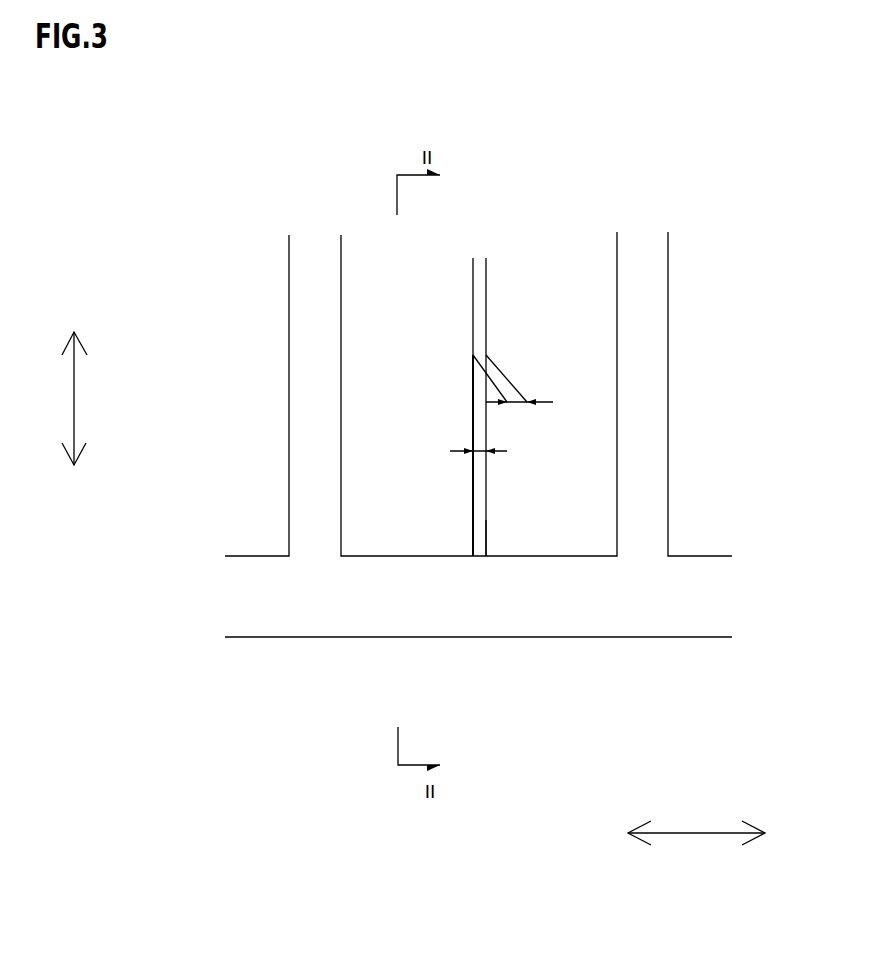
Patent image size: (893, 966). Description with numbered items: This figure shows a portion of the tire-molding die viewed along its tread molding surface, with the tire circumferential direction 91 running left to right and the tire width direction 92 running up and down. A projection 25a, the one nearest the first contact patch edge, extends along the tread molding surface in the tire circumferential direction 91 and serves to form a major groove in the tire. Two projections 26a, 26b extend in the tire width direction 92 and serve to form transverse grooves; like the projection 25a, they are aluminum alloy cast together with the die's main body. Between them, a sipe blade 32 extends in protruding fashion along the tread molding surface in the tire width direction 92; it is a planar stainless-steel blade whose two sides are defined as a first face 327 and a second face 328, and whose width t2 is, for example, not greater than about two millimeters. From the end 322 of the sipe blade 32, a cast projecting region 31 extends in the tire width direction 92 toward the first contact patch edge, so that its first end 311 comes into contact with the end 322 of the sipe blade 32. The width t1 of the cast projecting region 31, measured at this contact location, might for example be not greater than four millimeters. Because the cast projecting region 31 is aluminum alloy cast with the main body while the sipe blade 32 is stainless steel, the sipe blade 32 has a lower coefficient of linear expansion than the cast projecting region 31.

The projection 25a is at (464, 605).
The projection 26a is at (300, 382).
The projection 26b is at (655, 384).
The cast projecting region 31 is at (478, 273).
The first end of cast projecting region 311 is at (484, 356).
The sipe blade 32 is at (482, 486).
The end of sipe blade 322 is at (473, 354).
The first face 327 is at (473, 531).
The second face 328 is at (486, 528).
The width of cast projecting region t1 is at (519, 392).
The width of sipe blade t2 is at (482, 442).
The tire circumferential direction 91 is at (696, 824).
The tire width direction 92 is at (73, 384).